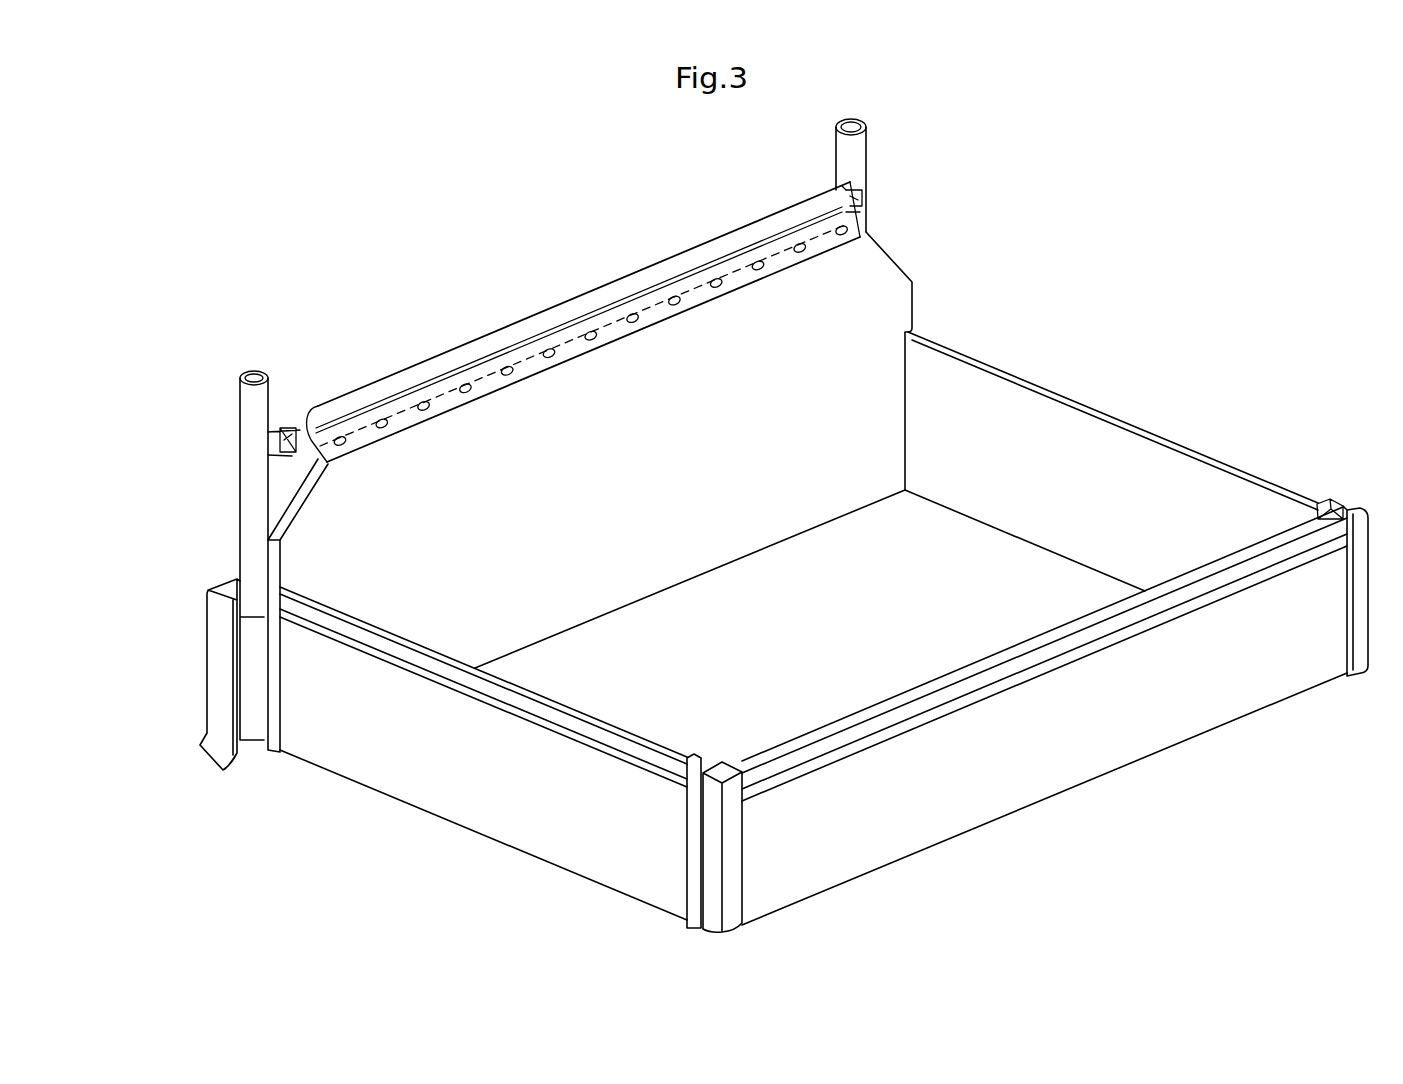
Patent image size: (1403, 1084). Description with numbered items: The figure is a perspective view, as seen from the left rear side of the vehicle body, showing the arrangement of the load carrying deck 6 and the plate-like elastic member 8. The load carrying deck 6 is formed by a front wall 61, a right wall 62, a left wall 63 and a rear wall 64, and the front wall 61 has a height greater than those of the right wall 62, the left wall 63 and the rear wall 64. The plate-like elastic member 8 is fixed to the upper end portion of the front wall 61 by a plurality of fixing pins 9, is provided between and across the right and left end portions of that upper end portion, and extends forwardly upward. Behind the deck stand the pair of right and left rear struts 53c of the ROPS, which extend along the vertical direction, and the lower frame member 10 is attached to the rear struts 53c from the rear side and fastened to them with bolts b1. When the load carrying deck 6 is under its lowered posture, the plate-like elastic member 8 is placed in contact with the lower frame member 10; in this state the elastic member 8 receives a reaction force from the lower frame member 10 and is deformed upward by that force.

The load carrying deck 6 is at (818, 582).
The plate-like elastic member 8 is at (581, 289).
The fixing pins 9 is at (806, 248).
The lower frame member 10 is at (287, 465).
The rear struts 53c is at (847, 162).
The front wall 61 is at (867, 390).
The right wall 62 is at (1257, 503).
The left wall 63 is at (437, 798).
The rear wall 64 is at (1097, 753).
The bolts b1 is at (303, 426).